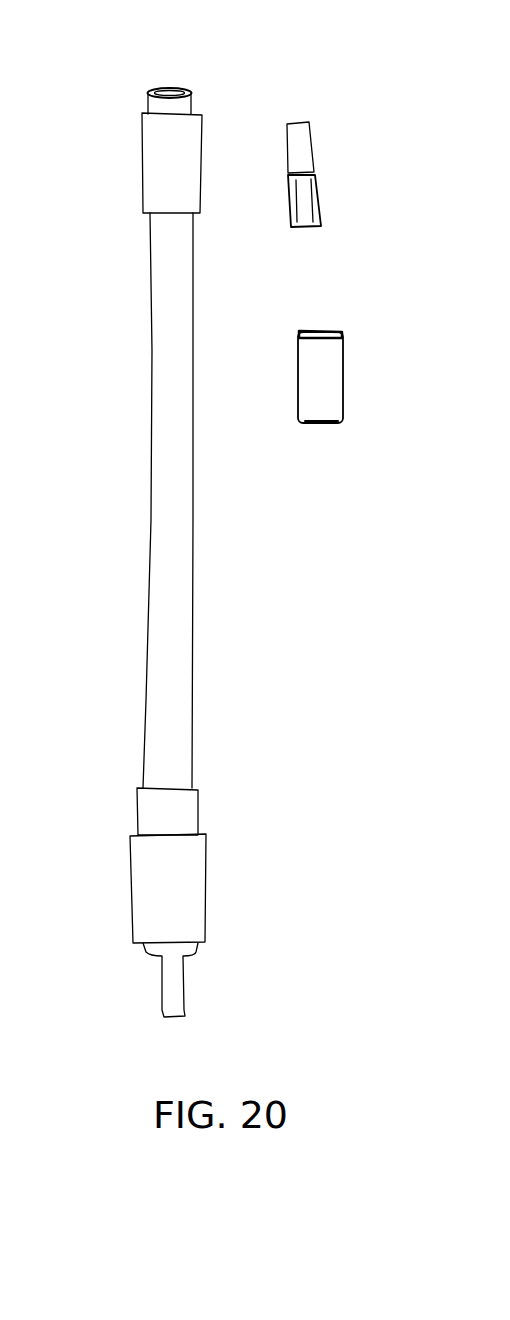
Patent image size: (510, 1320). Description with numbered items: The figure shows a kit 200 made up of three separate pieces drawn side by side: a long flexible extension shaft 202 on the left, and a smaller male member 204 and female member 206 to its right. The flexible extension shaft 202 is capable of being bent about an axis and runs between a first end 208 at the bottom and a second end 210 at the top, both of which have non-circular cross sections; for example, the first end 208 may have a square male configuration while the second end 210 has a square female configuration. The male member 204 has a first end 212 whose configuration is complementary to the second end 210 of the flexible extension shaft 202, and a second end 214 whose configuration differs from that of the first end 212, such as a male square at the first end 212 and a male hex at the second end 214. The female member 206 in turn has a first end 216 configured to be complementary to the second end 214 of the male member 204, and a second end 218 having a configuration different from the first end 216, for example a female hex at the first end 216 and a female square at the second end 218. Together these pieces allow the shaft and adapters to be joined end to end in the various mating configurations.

The kit 200 is at (332, 92).
The flexible extension shaft 202 is at (162, 458).
The male member 204 is at (348, 174).
The female member 206 is at (369, 383).
The first end 208 is at (190, 927).
The second end 210 is at (153, 108).
The first end 212 is at (308, 125).
The second end 214 is at (318, 225).
The first end 216 is at (342, 332).
The second end 218 is at (323, 423).